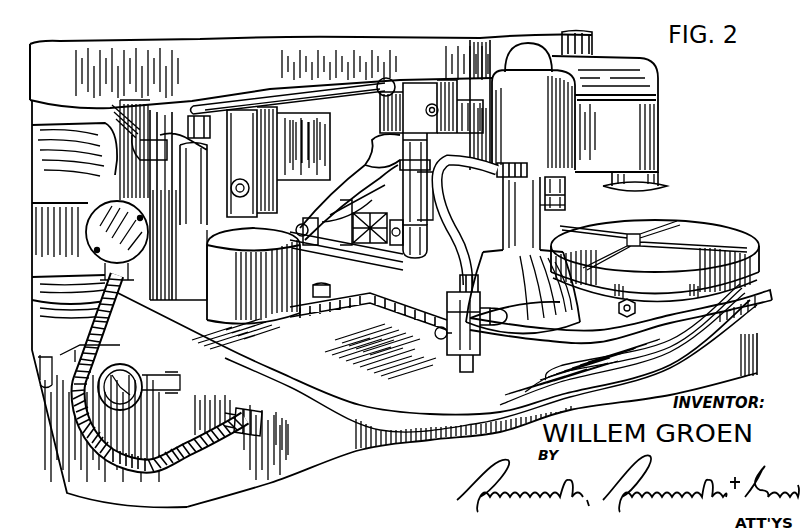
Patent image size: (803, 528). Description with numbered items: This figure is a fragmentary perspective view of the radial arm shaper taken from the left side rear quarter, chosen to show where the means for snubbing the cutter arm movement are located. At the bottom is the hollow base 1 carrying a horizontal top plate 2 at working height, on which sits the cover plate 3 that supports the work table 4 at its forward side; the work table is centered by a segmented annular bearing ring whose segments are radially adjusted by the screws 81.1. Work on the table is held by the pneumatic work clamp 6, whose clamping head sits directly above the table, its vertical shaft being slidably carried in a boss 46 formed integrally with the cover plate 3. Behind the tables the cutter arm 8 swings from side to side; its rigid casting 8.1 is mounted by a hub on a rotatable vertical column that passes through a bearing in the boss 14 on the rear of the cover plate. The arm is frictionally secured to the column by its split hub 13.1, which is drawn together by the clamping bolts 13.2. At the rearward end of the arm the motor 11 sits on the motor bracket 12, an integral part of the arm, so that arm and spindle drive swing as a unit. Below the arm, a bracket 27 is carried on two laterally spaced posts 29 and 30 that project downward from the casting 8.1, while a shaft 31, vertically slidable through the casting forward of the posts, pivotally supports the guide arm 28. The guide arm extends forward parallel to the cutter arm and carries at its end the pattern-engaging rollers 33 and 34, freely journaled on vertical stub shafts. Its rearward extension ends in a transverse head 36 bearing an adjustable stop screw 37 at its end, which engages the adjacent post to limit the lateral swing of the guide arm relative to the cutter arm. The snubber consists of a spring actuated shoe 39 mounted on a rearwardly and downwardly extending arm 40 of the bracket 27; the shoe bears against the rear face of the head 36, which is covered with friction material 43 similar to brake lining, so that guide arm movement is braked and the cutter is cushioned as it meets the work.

The hollow base 1 is at (758, 367).
The horizontal top plate 2 is at (765, 335).
The cover plate 3 is at (764, 291).
The work table 4 is at (732, 237).
The work clamp 6 is at (650, 117).
The cutter arm 8 is at (483, 40).
The rigid casting 8.1 is at (407, 112).
The motor 11 is at (58, 135).
The motor bracket 12 is at (233, 247).
The split hub 13.1 is at (258, 187).
The clamping bolts 13.2 is at (240, 115).
The boss 14 is at (258, 318).
The bracket 27 is at (360, 240).
The guide arm 28 is at (562, 207).
The post 29 is at (424, 252).
The post 30 is at (403, 147).
The shaft 31 is at (447, 131).
The roller 33 is at (565, 191).
The roller 34 is at (497, 176).
The head 36 is at (381, 243).
The adjustable stop screw 37 is at (399, 245).
The spring actuated shoe 39 is at (342, 252).
The arm 40 is at (323, 240).
The friction material 43 is at (373, 250).
The boss 46 is at (526, 300).
The screws 81.1 is at (617, 311).